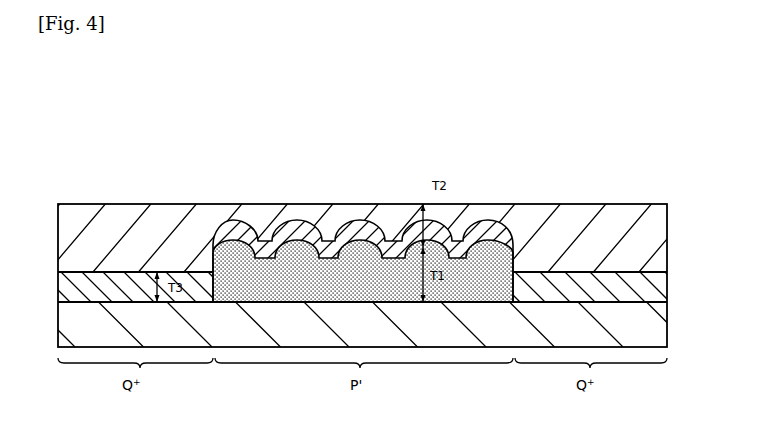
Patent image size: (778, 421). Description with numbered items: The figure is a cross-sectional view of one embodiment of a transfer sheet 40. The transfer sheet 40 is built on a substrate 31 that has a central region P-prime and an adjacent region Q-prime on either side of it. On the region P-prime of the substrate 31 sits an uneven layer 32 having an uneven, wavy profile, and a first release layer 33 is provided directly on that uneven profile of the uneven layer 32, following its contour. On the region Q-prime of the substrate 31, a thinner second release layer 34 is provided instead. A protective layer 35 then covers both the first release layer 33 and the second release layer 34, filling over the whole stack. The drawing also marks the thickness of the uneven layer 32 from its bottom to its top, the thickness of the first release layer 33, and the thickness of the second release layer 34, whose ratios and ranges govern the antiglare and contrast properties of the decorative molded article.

The transfer sheet 40 is at (387, 112).
The substrate 31 is at (660, 330).
The uneven layer 32 is at (237, 230).
The first release layer 33 is at (303, 226).
The second release layer 34 is at (660, 280).
The protective layer 35 is at (660, 227).